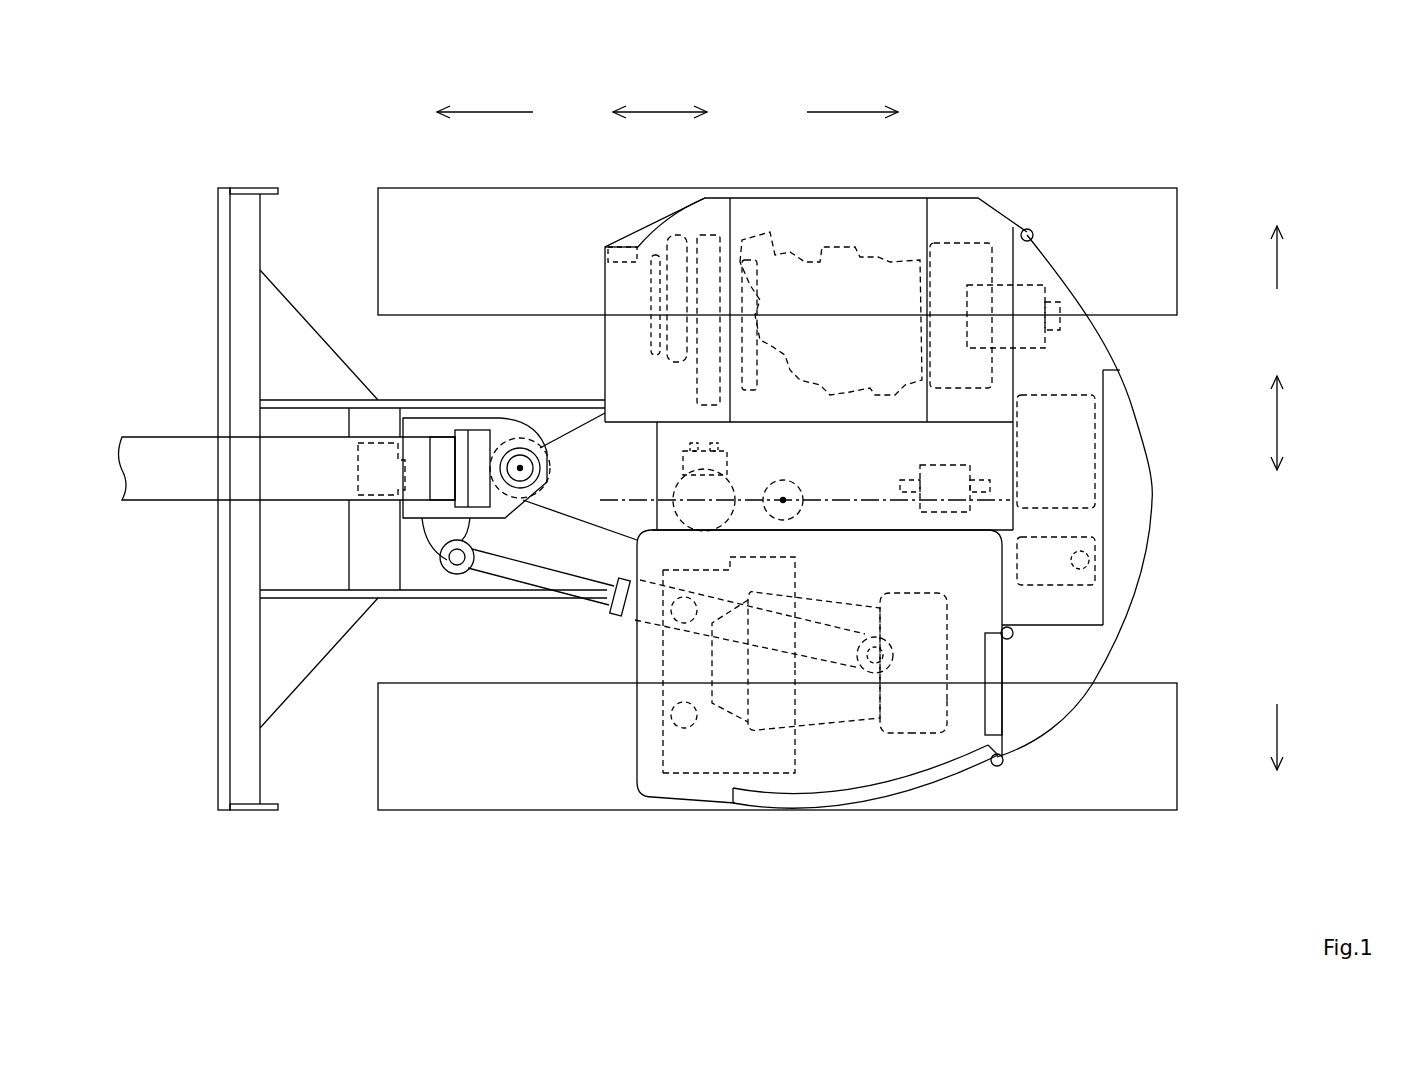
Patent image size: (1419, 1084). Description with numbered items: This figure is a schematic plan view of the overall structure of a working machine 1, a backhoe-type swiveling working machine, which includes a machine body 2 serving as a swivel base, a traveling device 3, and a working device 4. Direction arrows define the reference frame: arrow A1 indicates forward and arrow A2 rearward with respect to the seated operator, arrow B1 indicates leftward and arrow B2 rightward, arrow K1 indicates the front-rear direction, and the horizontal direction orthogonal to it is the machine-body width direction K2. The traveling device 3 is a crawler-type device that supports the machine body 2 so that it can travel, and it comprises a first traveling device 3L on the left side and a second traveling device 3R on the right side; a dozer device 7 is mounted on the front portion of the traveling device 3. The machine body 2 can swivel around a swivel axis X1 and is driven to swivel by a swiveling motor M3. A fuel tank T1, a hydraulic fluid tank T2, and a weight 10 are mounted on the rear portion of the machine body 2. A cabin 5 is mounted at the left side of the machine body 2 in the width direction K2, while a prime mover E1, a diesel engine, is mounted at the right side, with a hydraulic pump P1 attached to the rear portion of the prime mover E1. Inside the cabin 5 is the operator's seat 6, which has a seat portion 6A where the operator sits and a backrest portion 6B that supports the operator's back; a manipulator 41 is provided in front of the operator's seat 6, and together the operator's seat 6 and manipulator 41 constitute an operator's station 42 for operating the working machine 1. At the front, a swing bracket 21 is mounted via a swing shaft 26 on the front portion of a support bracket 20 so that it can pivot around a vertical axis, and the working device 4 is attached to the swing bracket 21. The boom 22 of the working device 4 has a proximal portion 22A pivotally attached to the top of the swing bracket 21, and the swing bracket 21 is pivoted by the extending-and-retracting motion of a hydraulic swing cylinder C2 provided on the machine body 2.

The working machine 1 is at (930, 399).
The machine body 2 is at (1152, 405).
The traveling device 3 is at (824, 508).
The second traveling device 3R is at (1063, 187).
The first traveling device 3L is at (1093, 812).
The working device 4 is at (289, 513).
The cabin 5 is at (672, 806).
The operator's seat 6 is at (861, 731).
The seat portion 6A is at (827, 733).
The backrest portion 6B is at (936, 743).
The dozer device 7 is at (306, 267).
The weight 10 is at (1153, 500).
The support bracket 20 is at (580, 410).
The swing bracket 21 is at (437, 418).
The boom 22 is at (163, 437).
The proximal portion 22A is at (445, 492).
The swing shaft 26 is at (520, 480).
The manipulator 41 is at (768, 776).
The operator's station 42 is at (650, 718).
The forward direction arrow A1 is at (495, 112).
The rearward direction arrow A2 is at (845, 112).
The front-rear direction K1 is at (660, 112).
The machine-body width direction K2 is at (1282, 416).
The leftward direction arrow B1 is at (1282, 726).
The rightward direction arrow B2 is at (1282, 256).
The swing cylinder C2 is at (620, 612).
The prime mover E1 is at (880, 243).
The hydraulic pump P1 is at (1003, 285).
The swiveling motor M3 is at (735, 485).
The swivel axis X1 is at (783, 500).
The fuel tank T1 is at (1083, 585).
The hydraulic fluid tank T2 is at (1098, 443).